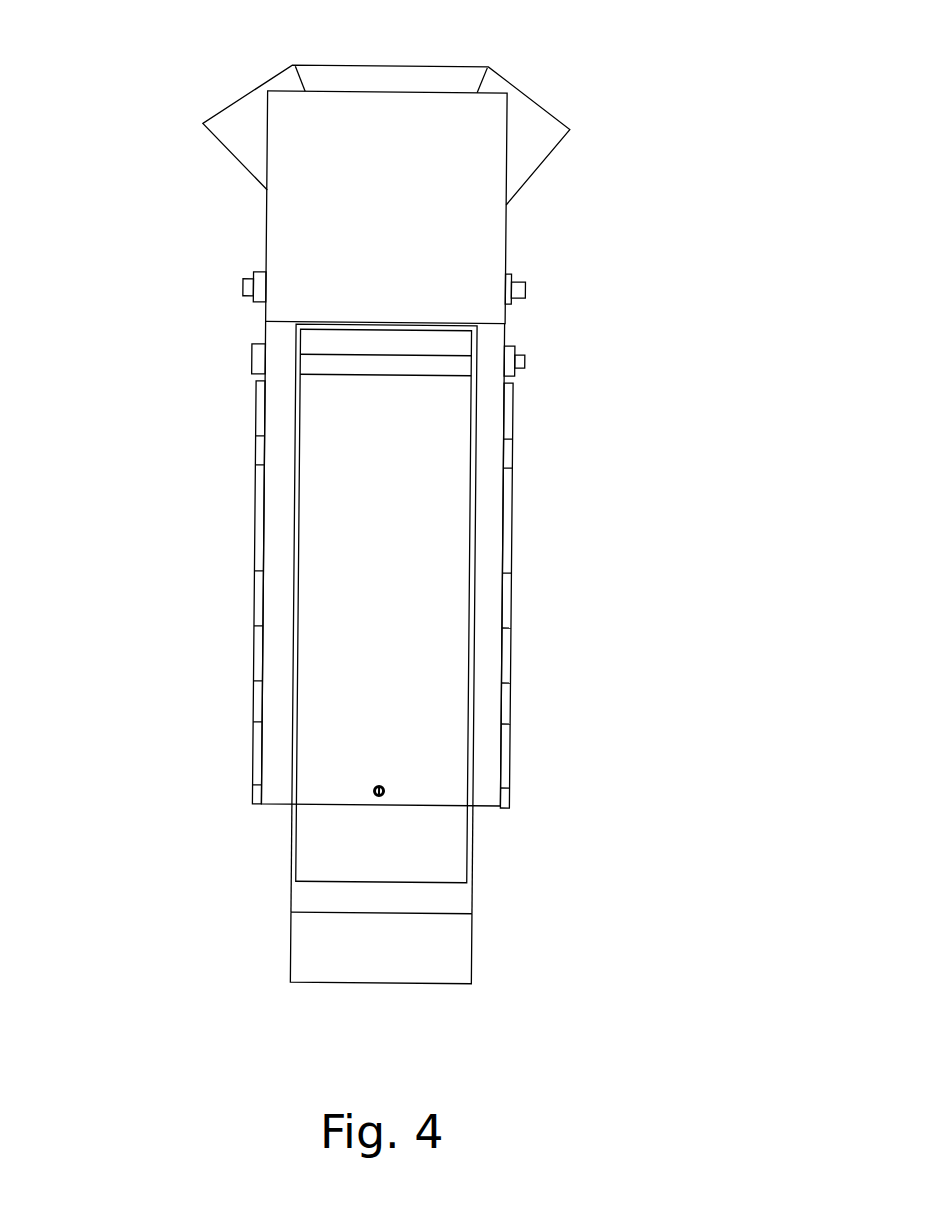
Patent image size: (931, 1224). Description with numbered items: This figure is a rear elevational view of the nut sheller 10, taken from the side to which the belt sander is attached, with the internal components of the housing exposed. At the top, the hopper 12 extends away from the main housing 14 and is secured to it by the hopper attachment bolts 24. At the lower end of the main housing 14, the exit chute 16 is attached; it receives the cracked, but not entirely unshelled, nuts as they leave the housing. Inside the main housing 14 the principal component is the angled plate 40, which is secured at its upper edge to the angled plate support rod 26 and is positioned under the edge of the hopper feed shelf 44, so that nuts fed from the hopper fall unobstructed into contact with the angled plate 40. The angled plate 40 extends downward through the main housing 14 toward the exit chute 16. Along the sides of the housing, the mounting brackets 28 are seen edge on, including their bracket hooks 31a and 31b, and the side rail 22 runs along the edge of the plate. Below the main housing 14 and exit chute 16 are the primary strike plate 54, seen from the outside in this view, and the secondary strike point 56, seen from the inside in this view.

The nut sheller 10 is at (126, 84).
The hopper 12 is at (535, 73).
The main housing 14 is at (200, 490).
The exit chute 16 is at (240, 950).
The left side rail 22 is at (294, 680).
The hopper attachment bolts 24 is at (528, 289).
The angled plate support rod 26 is at (526, 361).
The mounting brackets 28 is at (512, 597).
The bracket hook 31a is at (530, 457).
The bracket hook 31b is at (530, 710).
The angled plate 40 is at (398, 585).
The hopper feed shelf 44 is at (358, 345).
The primary strike plate 54 is at (381, 784).
The secondary strike point 56 is at (450, 837).